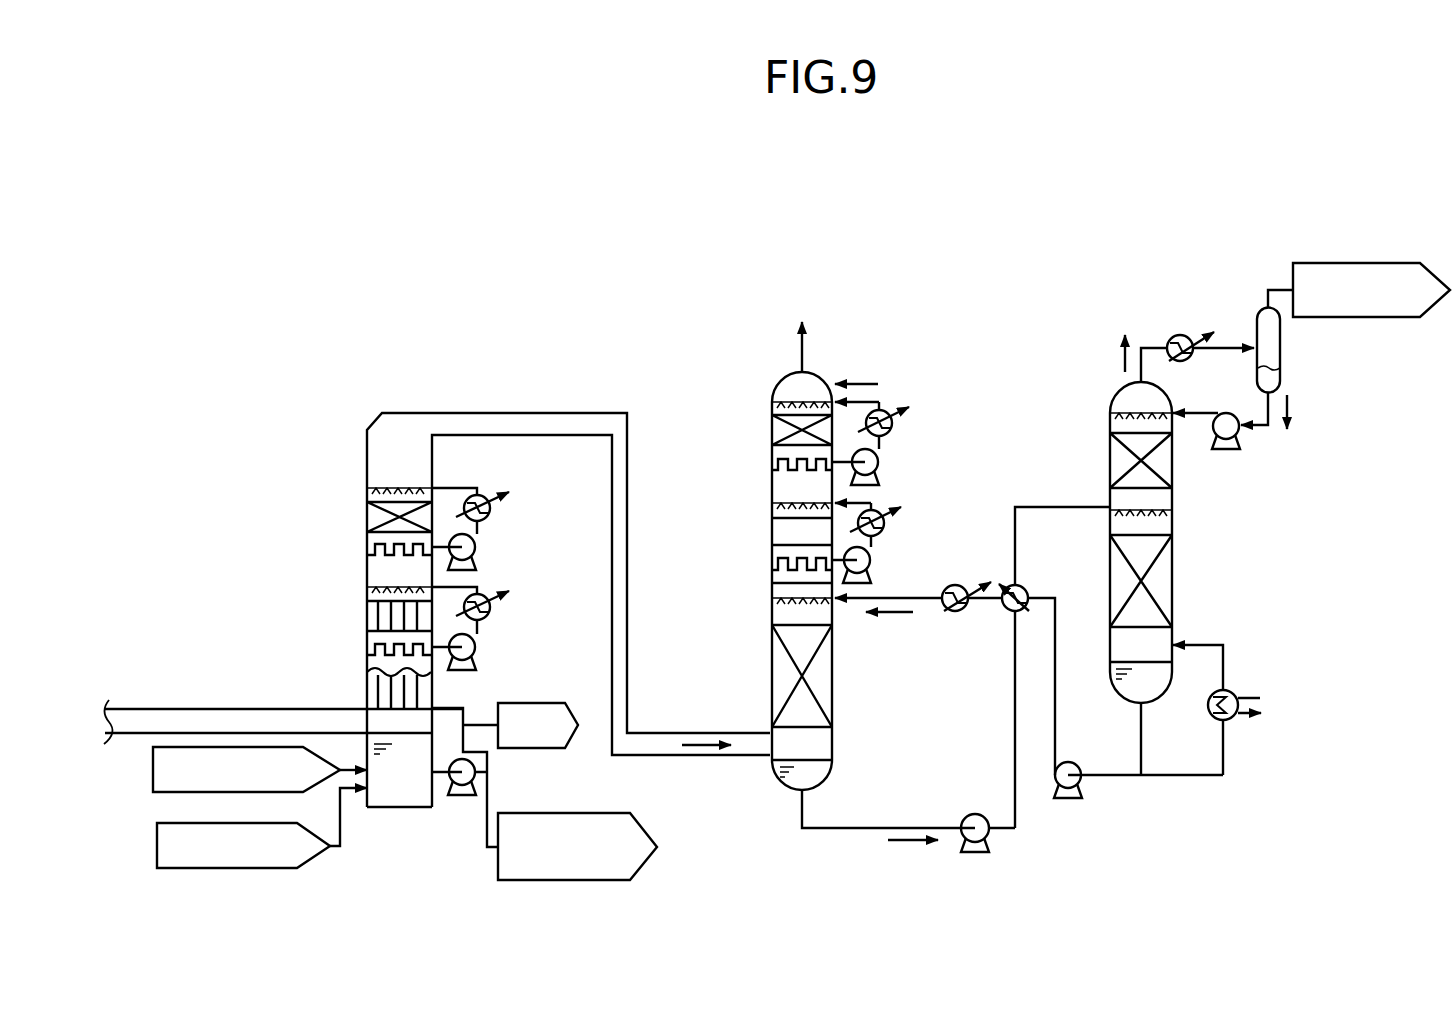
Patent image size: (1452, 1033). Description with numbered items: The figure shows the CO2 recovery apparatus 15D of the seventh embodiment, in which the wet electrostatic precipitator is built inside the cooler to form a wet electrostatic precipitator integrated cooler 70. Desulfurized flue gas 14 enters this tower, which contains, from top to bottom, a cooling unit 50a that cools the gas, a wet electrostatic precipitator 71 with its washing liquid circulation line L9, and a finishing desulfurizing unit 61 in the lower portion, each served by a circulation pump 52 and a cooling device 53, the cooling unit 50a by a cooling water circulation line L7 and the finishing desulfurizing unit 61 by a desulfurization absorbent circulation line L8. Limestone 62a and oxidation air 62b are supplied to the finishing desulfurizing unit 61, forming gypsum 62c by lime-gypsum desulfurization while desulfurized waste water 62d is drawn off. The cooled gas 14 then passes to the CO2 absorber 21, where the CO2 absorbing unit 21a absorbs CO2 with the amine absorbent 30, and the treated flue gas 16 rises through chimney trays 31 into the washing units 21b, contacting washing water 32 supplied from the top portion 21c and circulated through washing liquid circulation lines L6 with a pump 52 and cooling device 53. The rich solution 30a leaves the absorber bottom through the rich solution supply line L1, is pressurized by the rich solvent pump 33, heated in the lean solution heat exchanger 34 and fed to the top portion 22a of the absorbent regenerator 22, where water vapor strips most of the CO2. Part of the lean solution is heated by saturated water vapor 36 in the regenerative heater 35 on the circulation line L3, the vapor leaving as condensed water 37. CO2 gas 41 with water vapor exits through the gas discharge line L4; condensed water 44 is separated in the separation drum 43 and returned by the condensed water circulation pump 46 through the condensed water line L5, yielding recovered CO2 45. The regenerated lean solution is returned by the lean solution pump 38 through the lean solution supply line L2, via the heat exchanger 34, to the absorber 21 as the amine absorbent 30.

The wet electrostatic precipitator integrated cooler 70 is at (431, 393).
The cooling unit 50a is at (366, 516).
The wet electrostatic precipitator 71 is at (366, 613).
The finishing desulfurizing unit 61 is at (366, 678).
The circulation pump 52 is at (478, 556).
The cooling device 53 is at (493, 518).
The limestone 62a is at (153, 770).
The oxidation air 62b is at (157, 847).
The gypsum 62c is at (550, 703).
The desulfurized waste water discharge 62d is at (523, 813).
The cooling water circulation line L7 is at (457, 488).
The desulfurization absorbent circulation line L8 is at (448, 707).
The washing liquid circulation line L9 is at (457, 587).
The desulfurized flue gas 14 is at (703, 757).
The CO2 recovery apparatus 15D is at (1165, 240).
The treated flue gas 16 is at (800, 345).
The CO2 absorber 21 is at (900, 342).
The CO2 absorbing unit 21a is at (768, 675).
The washing unit 21b is at (772, 421).
The top portion 21c is at (818, 372).
The chimney tray 31 is at (772, 462).
The washing water 32 is at (855, 380).
The washing liquid circulation line L6 is at (880, 400).
The amine absorbent 30 is at (890, 618).
The rich solution 30a is at (910, 846).
The rich solvent pump 33 is at (975, 814).
The lean solution heat exchanger 34 is at (1032, 589).
The rich solution supply line L1 is at (833, 830).
The lean solution supply line L2 is at (1050, 735).
The lean solution pump 38 is at (1078, 762).
The absorbent regenerator 22 is at (1078, 326).
The top portion 22a is at (1115, 395).
The CO2 gas 41 is at (1115, 357).
The gas discharge line L4 is at (1228, 345).
The separation drum 43 is at (1282, 352).
The recovered CO2 45 is at (1335, 263).
The condensed water 44 is at (1290, 405).
The condensed water circulation pump 46 is at (1226, 452).
The condensed water line L5 is at (1200, 416).
The regenerative heater 35 is at (1238, 689).
The saturated water vapor 36 is at (1240, 694).
The condensed water 37 is at (1238, 720).
The circulation line L3 is at (1185, 780).